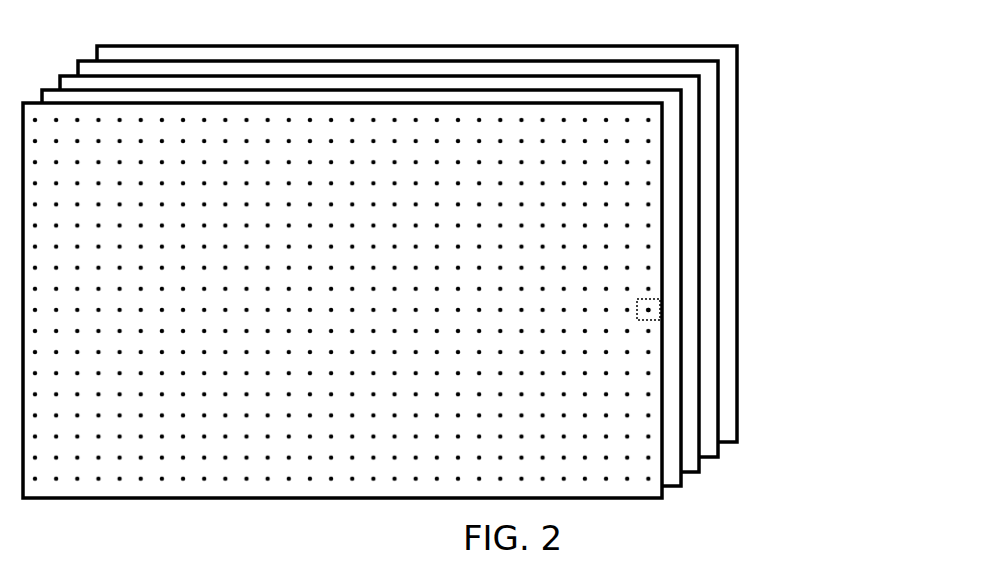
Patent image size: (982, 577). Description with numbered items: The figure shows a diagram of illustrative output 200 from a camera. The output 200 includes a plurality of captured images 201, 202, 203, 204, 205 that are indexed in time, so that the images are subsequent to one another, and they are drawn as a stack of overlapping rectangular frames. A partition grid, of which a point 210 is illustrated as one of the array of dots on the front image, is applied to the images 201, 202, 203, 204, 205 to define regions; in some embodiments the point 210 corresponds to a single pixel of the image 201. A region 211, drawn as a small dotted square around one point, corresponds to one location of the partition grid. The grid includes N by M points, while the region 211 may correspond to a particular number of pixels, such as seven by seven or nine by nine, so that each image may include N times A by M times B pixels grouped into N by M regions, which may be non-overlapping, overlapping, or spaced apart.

The output 200 is at (852, 60).
The captured image 201 is at (662, 270).
The captured image 202 is at (681, 233).
The captured image 203 is at (699, 198).
The captured image 204 is at (718, 160).
The captured image 205 is at (737, 122).
The point 210 is at (650, 395).
The region 211 is at (660, 312).